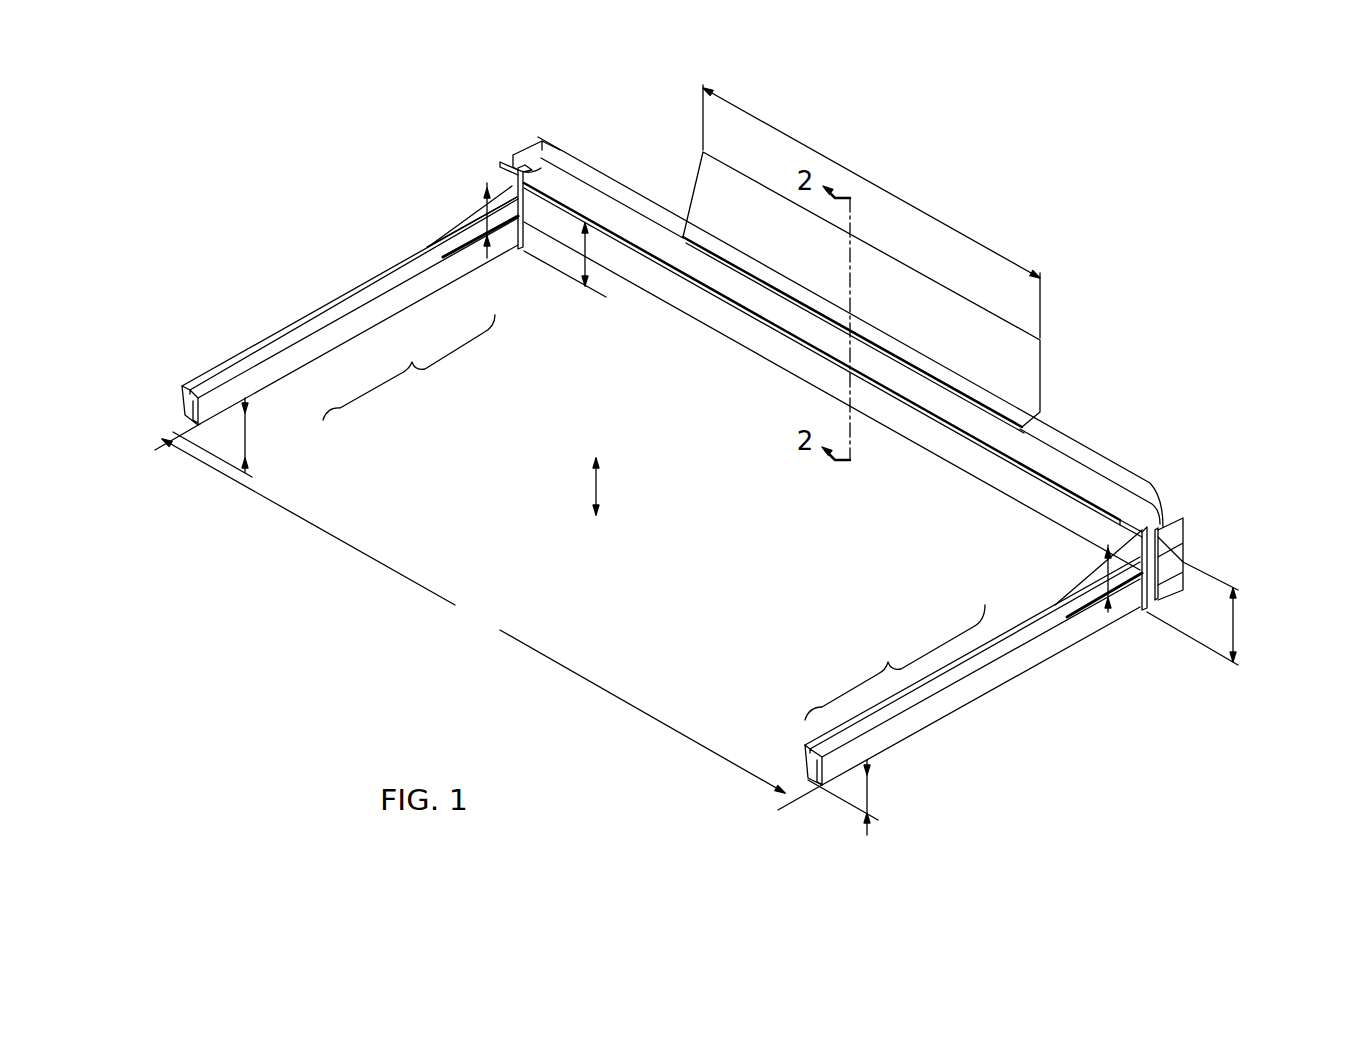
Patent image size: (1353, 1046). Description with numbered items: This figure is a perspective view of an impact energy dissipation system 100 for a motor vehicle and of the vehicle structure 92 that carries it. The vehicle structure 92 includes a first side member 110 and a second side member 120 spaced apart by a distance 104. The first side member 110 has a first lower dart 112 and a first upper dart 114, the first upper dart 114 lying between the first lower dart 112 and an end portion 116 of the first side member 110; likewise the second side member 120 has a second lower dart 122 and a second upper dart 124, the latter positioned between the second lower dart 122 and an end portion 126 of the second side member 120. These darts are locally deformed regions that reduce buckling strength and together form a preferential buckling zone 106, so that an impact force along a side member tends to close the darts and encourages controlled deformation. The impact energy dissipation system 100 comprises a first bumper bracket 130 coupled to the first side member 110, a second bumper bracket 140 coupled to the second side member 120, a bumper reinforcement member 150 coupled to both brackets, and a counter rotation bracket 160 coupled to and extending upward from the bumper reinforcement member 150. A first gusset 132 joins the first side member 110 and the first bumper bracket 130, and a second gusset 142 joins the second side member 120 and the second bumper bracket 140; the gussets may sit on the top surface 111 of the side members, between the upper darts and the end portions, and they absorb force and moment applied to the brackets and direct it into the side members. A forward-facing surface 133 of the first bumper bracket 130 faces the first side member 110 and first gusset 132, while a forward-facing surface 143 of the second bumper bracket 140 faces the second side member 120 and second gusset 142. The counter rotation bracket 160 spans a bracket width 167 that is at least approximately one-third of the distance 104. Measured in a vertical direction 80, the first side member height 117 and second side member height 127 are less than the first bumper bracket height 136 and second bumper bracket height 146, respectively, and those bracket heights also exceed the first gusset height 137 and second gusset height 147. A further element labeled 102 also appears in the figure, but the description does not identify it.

The vertical direction 80 is at (598, 487).
The vehicle structure 92 is at (1062, 752).
The impact energy dissipation system 100 is at (343, 179).
The far rail 102 is at (1150, 487).
The distance between the first side member and the second side member 104 is at (488, 617).
The preferential buckling zone 106 is at (654, 517).
The first side member 110 is at (336, 311).
The top surface 111 is at (345, 292).
The first lower dart 112 is at (277, 378).
The first upper dart 114 is at (427, 247).
The end portion of the first side member 116 is at (513, 240).
The first side member height 117 is at (246, 447).
The second side member 120 is at (972, 671).
The second lower dart 122 is at (900, 745).
The second upper dart 124 is at (1045, 610).
The end portion of the second side member 126 is at (1128, 608).
The second side member height 127 is at (868, 805).
The first bumper bracket 130 is at (545, 165).
The first gusset 132 is at (487, 200).
The forward-facing surface of the first bumper bracket 133 is at (500, 164).
The first bumper bracket height 136 is at (592, 280).
The first gusset height 137 is at (470, 226).
The second bumper bracket 140 is at (1157, 587).
The second gusset 142 is at (1073, 577).
The forward-facing surface of the second bumper bracket 143 is at (1137, 612).
The second bumper bracket height 146 is at (1240, 618).
The second gusset height 147 is at (1103, 565).
The bumper reinforcement member 150 is at (1178, 511).
The counter rotation bracket 160 is at (1031, 329).
The bracket width 167 is at (985, 245).